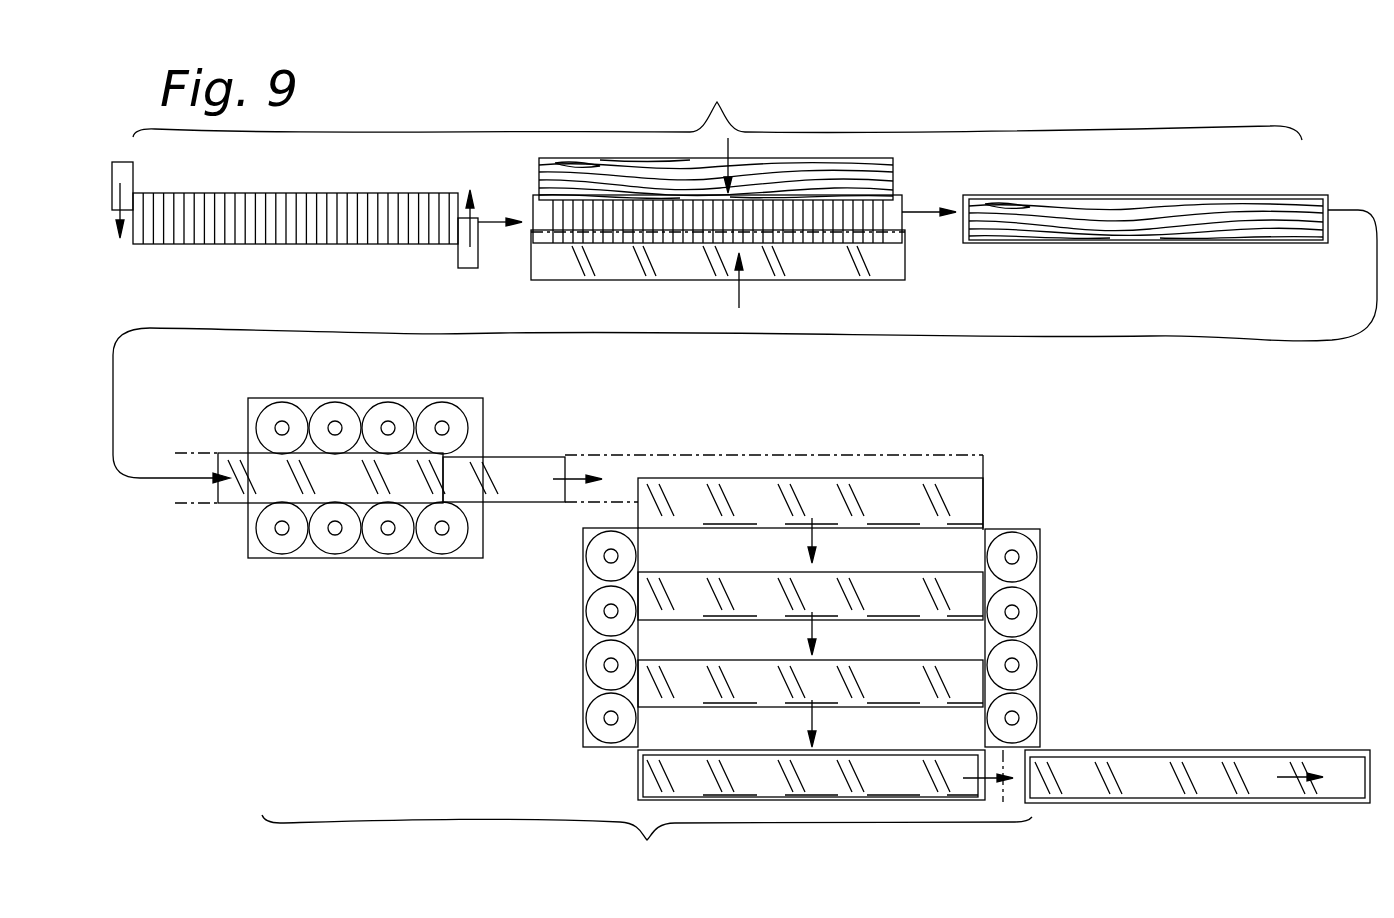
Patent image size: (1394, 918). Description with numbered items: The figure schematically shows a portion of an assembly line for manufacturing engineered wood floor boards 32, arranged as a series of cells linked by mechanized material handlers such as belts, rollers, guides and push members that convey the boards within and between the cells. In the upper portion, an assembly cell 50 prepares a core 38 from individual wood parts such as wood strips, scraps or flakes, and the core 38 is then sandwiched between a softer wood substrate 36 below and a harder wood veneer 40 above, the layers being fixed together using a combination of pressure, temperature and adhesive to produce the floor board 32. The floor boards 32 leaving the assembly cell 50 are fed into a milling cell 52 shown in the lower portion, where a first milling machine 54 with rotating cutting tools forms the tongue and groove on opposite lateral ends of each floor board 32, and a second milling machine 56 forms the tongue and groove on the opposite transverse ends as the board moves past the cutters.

The floor board 32 is at (1303, 175).
The wood substrate 36 is at (893, 270).
The core 38 is at (311, 196).
The wood veneer 40 is at (893, 178).
The assembly cell 50 is at (717, 105).
The milling cell 52 is at (647, 666).
The first milling machine 54 is at (272, 558).
The second milling machine 56 is at (1027, 529).